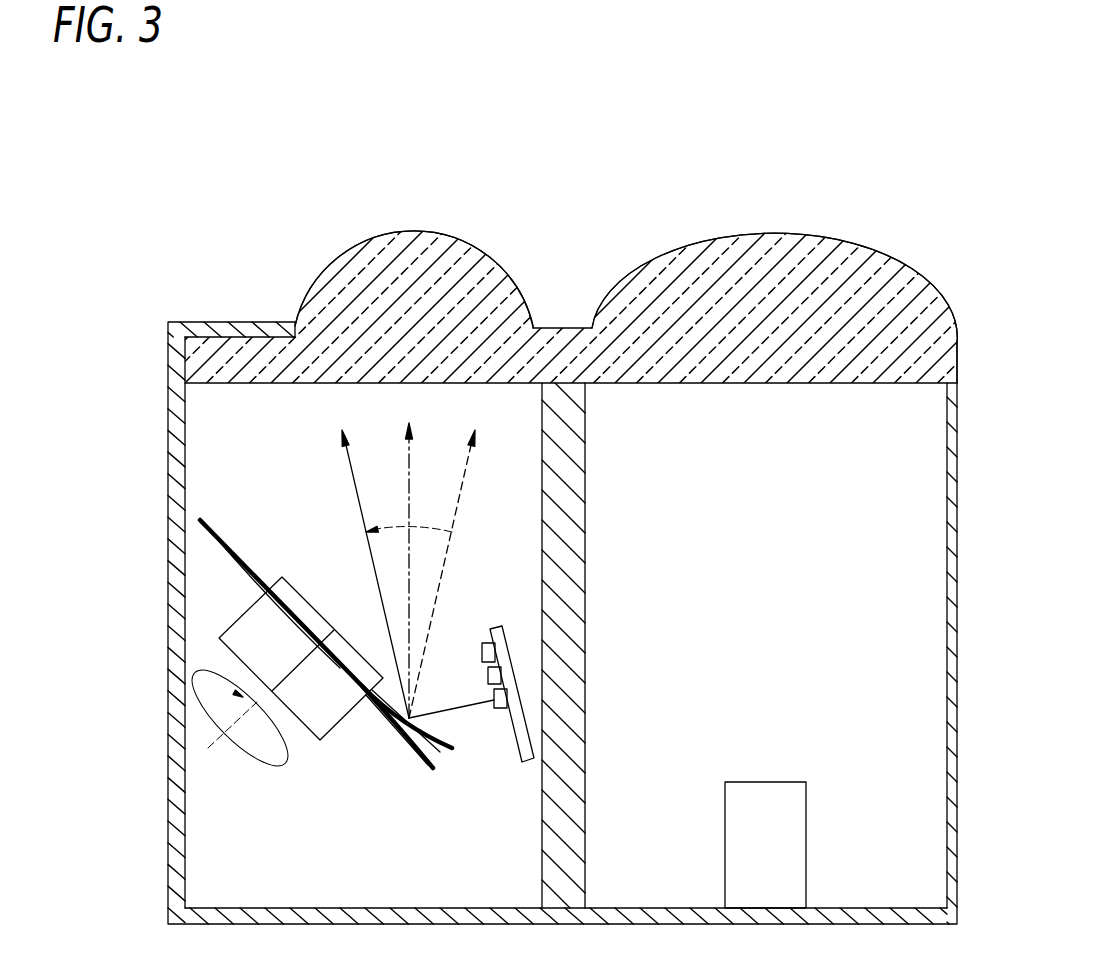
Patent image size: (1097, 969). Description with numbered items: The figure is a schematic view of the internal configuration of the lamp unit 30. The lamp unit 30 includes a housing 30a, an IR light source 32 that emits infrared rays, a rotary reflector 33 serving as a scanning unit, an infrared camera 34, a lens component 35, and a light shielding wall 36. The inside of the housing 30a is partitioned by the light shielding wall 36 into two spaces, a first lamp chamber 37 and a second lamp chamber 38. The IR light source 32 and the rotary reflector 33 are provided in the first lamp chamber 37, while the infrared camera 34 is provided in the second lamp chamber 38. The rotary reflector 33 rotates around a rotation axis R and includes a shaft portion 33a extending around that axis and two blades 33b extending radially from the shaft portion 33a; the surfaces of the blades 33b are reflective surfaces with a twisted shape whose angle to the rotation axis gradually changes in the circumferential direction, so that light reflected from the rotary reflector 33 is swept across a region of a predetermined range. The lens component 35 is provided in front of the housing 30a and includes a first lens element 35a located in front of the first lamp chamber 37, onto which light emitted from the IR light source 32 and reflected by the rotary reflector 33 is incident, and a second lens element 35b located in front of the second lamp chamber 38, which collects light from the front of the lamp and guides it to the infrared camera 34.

The lamp unit 30 is at (547, 163).
The housing 30a is at (168, 572).
The IR light source 32 is at (490, 684).
The rotary reflector 33 is at (312, 788).
The shaft portion 33a is at (313, 598).
The blades 33b is at (424, 762).
The infrared camera 34 is at (770, 782).
The lens component 35 is at (252, 269).
The first lens element 35a is at (410, 228).
The second lens element 35b is at (783, 238).
The light shielding wall 36 is at (585, 574).
The first lamp chamber 37 is at (243, 428).
The second lamp chamber 38 is at (907, 430).